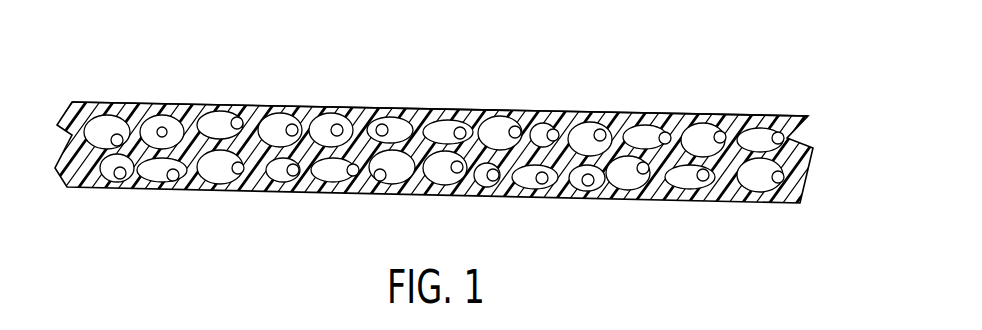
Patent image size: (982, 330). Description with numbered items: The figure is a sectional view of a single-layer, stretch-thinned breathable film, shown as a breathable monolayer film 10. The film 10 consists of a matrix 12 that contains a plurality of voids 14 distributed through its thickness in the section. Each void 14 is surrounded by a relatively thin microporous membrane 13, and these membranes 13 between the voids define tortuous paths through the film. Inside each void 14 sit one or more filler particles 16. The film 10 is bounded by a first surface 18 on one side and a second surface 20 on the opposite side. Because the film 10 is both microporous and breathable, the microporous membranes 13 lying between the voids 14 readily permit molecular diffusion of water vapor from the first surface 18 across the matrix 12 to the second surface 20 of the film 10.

The breathable monolayer film 10 is at (800, 190).
The matrix 12 is at (726, 114).
The microporous membranes 13 is at (462, 135).
The voids 14 is at (526, 174).
The filler particles 16 is at (543, 173).
The first surface 18 is at (112, 102).
The second surface 20 is at (123, 191).